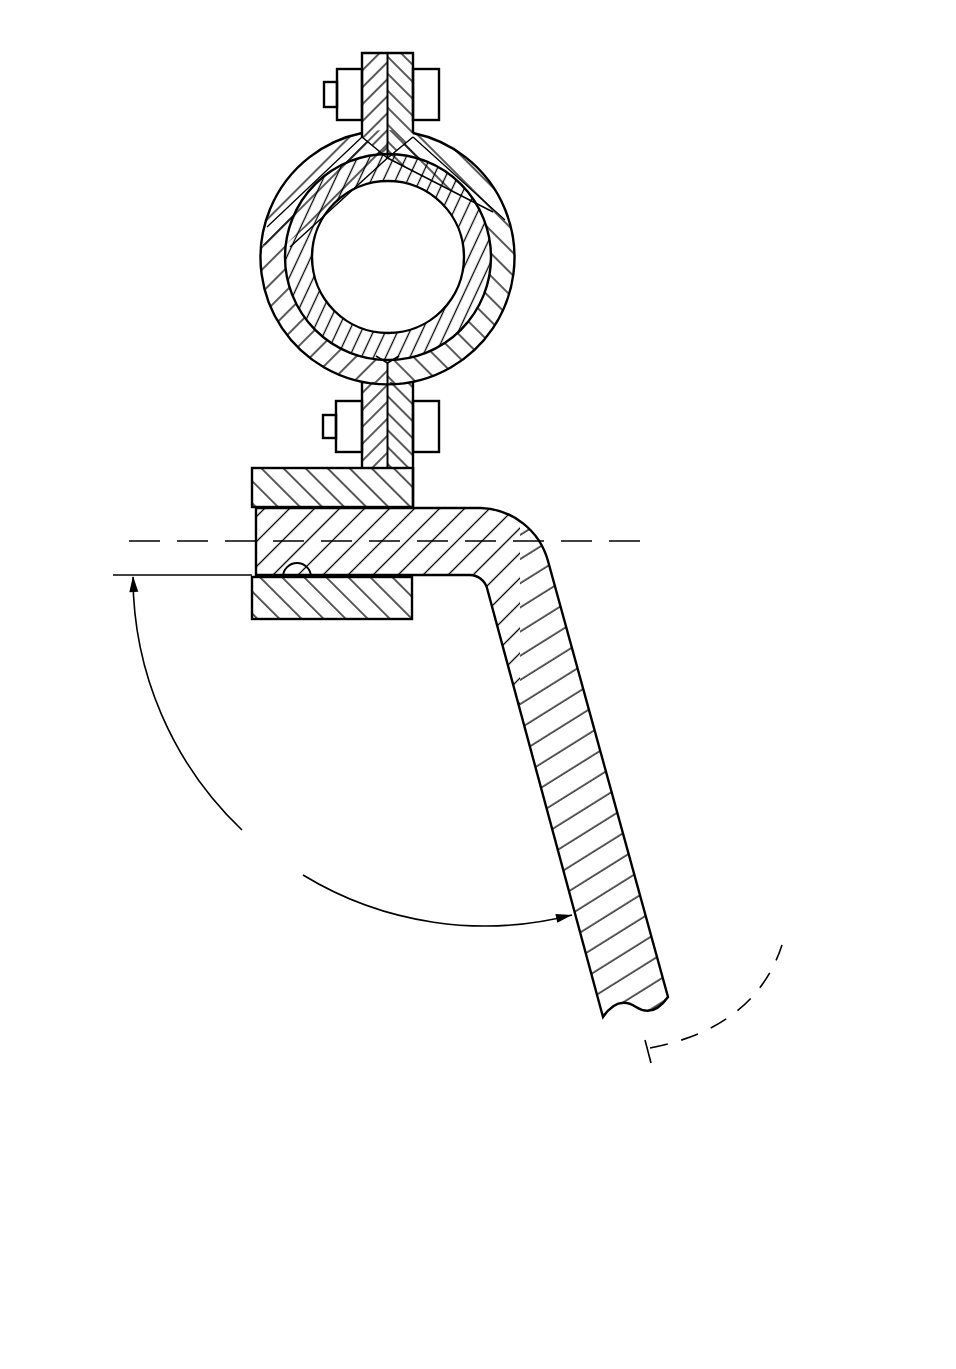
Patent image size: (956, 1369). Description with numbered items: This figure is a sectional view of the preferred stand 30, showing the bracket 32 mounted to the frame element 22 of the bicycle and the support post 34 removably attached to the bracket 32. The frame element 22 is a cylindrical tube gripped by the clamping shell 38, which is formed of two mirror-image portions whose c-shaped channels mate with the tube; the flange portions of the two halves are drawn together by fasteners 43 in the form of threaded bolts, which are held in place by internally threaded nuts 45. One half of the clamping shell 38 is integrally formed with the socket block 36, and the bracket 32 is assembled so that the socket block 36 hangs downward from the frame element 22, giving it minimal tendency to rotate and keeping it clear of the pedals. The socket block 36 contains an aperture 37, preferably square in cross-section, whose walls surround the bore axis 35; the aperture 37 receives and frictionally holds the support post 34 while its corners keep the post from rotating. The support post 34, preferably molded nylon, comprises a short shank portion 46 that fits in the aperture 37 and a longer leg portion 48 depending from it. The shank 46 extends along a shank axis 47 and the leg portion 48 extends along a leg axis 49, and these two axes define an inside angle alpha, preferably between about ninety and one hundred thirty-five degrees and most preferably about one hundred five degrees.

The frame element 22 is at (447, 190).
The stand 30 is at (769, 232).
The bracket 32 is at (544, 283).
The support post 34 is at (634, 647).
The bore axis 35 is at (583, 541).
The socket block 36 is at (387, 616).
The aperture 37 is at (288, 580).
The clamping shell 38 is at (276, 207).
The fasteners 43 is at (426, 70).
The nuts 45 is at (350, 70).
The shank portion 46 is at (432, 514).
The shank axis 47 is at (195, 538).
The leg portion 48 is at (622, 862).
The leg axis 49 is at (731, 991).